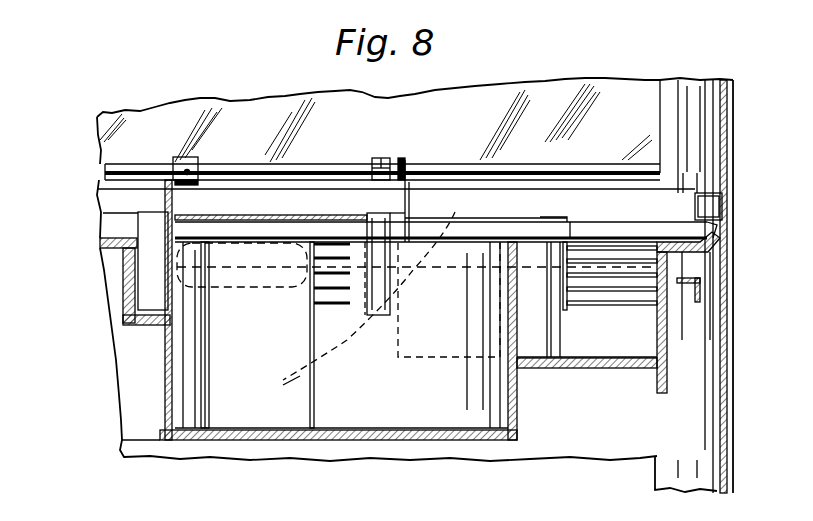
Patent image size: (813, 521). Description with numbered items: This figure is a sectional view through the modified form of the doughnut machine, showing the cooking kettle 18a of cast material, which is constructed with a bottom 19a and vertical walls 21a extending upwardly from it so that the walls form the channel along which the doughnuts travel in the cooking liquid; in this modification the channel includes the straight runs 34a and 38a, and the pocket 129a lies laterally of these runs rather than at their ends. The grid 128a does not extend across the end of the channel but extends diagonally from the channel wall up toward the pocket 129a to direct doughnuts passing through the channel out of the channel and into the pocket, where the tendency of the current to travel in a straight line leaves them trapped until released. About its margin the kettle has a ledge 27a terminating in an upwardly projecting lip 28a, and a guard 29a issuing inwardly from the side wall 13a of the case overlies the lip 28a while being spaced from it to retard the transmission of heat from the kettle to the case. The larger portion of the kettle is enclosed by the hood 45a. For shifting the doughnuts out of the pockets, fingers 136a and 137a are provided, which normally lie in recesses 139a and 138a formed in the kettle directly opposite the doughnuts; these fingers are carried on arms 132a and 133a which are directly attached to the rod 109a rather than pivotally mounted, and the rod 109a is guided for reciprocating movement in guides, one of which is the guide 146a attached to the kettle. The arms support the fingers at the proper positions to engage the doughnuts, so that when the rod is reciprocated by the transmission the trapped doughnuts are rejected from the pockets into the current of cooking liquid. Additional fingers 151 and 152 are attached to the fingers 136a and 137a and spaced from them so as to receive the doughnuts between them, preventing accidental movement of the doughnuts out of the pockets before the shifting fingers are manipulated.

The hood 45a is at (625, 100).
The side wall 13a is at (733, 157).
The rod 109a is at (243, 164).
The guide 146a is at (385, 160).
The arm 133a is at (103, 197).
The arm 132a is at (397, 202).
The finger 136a is at (391, 287).
The finger 151 is at (570, 233).
The guard 29a is at (698, 210).
The lip 28a is at (713, 233).
The ledge 27a is at (710, 248).
The finger 137a is at (172, 272).
The recess 138a is at (120, 323).
The grid 128a is at (330, 310).
The recess 139a is at (264, 389).
The finger 152 is at (378, 303).
The vertical wall 21a is at (163, 368).
The cooking kettle 18a is at (163, 440).
The pocket 129a is at (270, 445).
The run 38a is at (380, 417).
The bottom 19a is at (428, 443).
The run 34a is at (627, 340).